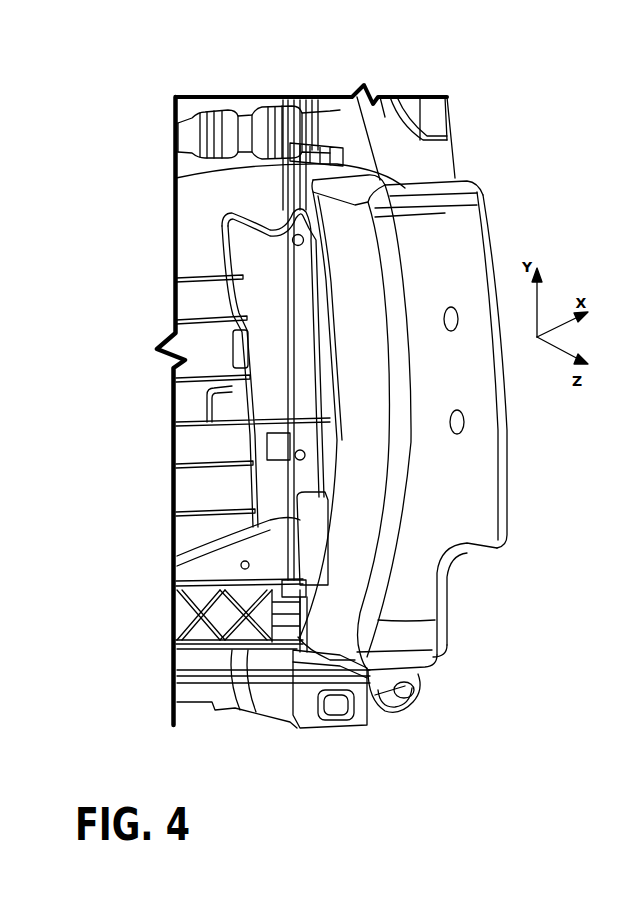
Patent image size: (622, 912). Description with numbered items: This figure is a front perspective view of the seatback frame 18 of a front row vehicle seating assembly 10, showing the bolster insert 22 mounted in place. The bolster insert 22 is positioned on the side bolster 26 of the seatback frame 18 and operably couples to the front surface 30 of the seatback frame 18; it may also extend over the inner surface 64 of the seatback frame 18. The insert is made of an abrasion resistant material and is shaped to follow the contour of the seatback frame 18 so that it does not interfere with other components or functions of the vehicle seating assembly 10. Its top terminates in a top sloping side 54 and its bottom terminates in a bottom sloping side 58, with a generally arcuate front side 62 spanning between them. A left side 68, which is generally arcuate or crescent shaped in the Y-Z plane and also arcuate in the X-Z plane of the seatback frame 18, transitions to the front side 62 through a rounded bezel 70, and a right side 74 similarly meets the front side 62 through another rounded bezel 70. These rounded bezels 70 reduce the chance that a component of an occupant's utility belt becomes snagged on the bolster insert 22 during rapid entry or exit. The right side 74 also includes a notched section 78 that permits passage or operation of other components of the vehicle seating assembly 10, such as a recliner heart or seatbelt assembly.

The vehicle seating assembly 10 is at (497, 118).
The seatback frame 18 is at (276, 698).
The bolster insert 22 is at (434, 436).
The side bolster 26 is at (437, 158).
The front surface 30 is at (388, 117).
The top sloping side 54 is at (176, 178).
The bottom sloping side 58 is at (418, 695).
The front side 62 is at (444, 383).
The inner surface 64 is at (347, 118).
The left side 68 is at (350, 338).
The rounded bezel 70 is at (388, 233).
The right side 74 is at (508, 490).
The notched section 78 is at (465, 568).